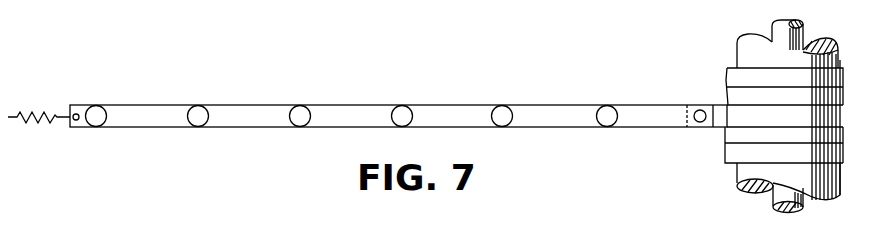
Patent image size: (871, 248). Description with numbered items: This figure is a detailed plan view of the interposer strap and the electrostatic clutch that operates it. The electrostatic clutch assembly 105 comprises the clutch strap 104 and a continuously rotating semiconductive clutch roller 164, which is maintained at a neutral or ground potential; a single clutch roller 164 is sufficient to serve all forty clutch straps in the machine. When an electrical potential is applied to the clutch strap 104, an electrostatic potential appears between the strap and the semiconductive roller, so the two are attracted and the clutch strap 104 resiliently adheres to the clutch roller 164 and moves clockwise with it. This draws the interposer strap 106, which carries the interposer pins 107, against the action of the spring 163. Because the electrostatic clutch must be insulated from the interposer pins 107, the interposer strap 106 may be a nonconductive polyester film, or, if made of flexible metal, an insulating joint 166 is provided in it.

The clutch strap 104 is at (841, 111).
The electrostatic clutch assembly 105 is at (708, 176).
The interposer strap 106 is at (370, 126).
The interposer pins 107 is at (198, 108).
The spring 163 is at (18, 112).
The clutch roller 164 is at (823, 196).
The insulating joint 166 is at (697, 109).